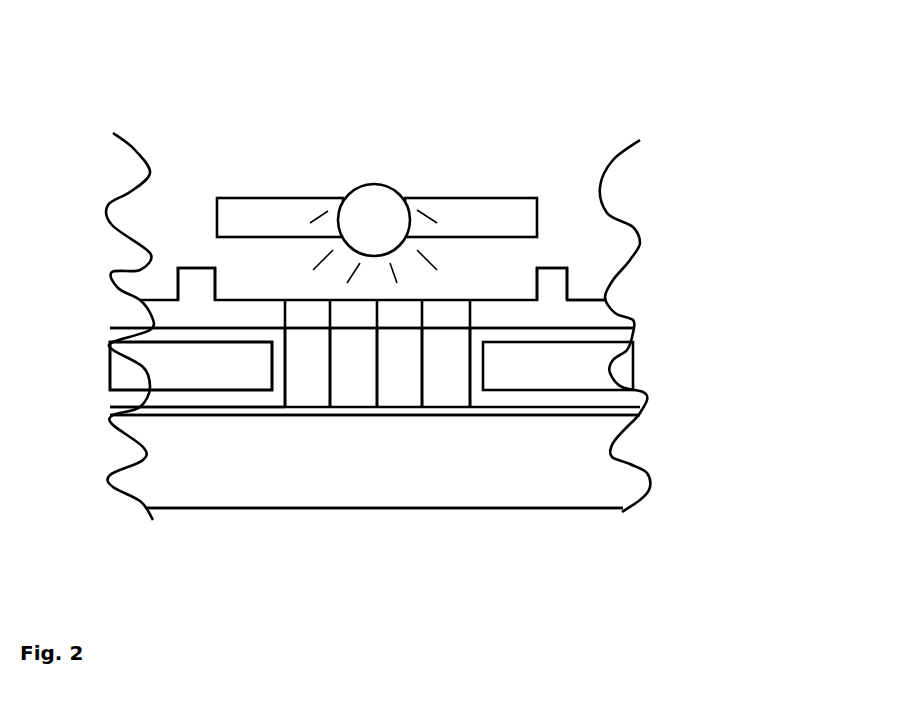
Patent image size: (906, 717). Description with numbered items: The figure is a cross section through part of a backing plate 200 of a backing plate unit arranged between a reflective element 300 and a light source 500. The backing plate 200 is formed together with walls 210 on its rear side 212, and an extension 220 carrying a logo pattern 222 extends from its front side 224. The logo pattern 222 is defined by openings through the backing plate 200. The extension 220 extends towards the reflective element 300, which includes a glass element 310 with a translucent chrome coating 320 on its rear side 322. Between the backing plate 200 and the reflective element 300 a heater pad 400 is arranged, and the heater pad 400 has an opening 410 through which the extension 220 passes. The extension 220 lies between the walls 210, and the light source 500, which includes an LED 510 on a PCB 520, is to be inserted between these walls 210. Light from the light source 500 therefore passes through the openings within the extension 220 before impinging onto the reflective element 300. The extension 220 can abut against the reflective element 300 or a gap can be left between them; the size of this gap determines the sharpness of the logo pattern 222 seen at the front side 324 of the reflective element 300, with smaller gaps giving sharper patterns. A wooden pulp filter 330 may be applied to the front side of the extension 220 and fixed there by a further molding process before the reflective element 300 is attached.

The backing plate 200 is at (583, 323).
The walls 210 is at (567, 278).
The rear side 212 is at (588, 297).
The extension 220 is at (473, 397).
The logo pattern 222 is at (382, 420).
The front side 224 is at (573, 333).
The reflective element 300 is at (615, 481).
The glass element 310 is at (515, 440).
The translucent chrome coating 320 is at (513, 412).
The rear side 322 is at (210, 411).
The front side 324 is at (193, 510).
The wooden pulp filter 330 is at (320, 395).
The heater pad 400 is at (583, 368).
The opening 410 is at (267, 382).
The light source 500 is at (352, 151).
The LED 510 is at (380, 210).
The PCB 520 is at (253, 223).